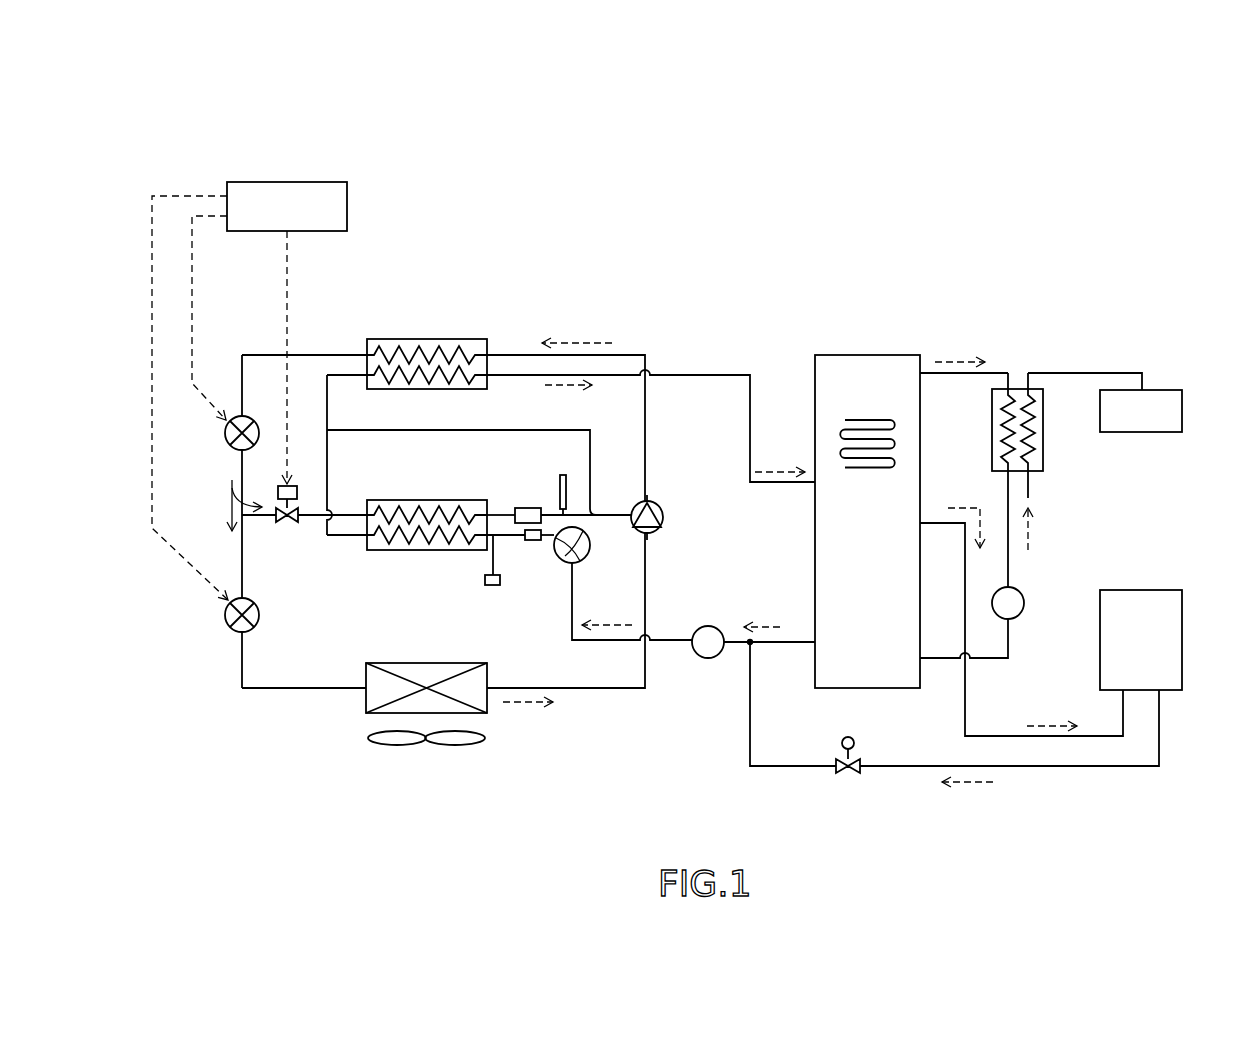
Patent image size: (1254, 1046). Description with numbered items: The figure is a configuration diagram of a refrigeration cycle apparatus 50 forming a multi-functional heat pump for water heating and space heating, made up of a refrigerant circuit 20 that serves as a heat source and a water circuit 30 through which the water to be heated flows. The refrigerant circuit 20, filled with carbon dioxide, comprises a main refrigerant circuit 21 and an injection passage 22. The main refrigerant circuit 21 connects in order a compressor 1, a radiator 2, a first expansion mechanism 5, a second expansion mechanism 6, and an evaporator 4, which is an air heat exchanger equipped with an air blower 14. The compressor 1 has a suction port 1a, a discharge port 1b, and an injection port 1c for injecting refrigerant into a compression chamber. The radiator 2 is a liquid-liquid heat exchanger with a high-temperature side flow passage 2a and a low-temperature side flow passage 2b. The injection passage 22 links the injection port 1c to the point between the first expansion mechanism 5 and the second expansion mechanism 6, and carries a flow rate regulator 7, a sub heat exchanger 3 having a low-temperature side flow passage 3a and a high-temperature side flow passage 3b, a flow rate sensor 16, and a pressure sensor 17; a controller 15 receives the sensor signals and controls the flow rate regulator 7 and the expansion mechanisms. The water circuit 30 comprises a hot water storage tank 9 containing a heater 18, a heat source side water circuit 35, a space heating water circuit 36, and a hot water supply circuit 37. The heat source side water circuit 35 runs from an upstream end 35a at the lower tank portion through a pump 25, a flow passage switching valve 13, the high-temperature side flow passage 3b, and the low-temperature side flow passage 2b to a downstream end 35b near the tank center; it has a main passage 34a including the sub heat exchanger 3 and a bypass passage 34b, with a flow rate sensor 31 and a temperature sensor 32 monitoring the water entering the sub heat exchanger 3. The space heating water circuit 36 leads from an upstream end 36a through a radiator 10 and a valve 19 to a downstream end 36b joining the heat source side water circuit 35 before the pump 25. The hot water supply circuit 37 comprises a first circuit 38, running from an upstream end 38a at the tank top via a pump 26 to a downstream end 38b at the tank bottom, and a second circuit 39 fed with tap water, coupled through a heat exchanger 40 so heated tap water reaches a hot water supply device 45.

The compressor 1 is at (657, 509).
The suction port 1a is at (654, 530).
The discharge port 1b is at (655, 501).
The injection port 1c is at (628, 510).
The radiator 2 is at (430, 347).
The high-temperature side flow passage 2a is at (455, 348).
The low-temperature side flow passage 2b is at (440, 382).
The sub heat exchanger 3 is at (427, 543).
The low-temperature side flow passage 3a is at (418, 506).
The high-temperature side flow passage 3b is at (445, 546).
The evaporator 4 is at (385, 661).
The first expansion mechanism 5 is at (224, 440).
The second expansion mechanism 6 is at (224, 620).
The flow rate regulator 7 is at (292, 487).
The hot water storage tank 9 is at (867, 494).
The radiator 10 is at (1160, 590).
The flow passage switching valve 13 is at (584, 560).
The air blower 14 is at (470, 741).
The controller 15 is at (305, 181).
The flow rate sensor 16 is at (528, 506).
The pressure sensor 17 is at (563, 473).
The heater 18 is at (866, 418).
The valve 19 is at (845, 782).
The refrigerant circuit 20 is at (600, 693).
The main refrigerant circuit 21 is at (612, 352).
The injection passage 22 is at (501, 512).
The pump 25 is at (702, 658).
The pump 26 is at (1020, 612).
The water circuit 30 is at (828, 282).
The flow rate sensor 31 is at (527, 544).
The temperature sensor 32 is at (493, 587).
The main passage 34a is at (332, 540).
The bypass passage 34b is at (400, 430).
The heat source side water circuit 35 is at (681, 371).
The upstream end 35a is at (815, 636).
The downstream end 35b is at (815, 490).
The space heating water circuit 36 is at (933, 676).
The upstream end 36a is at (915, 523).
The downstream end 36b is at (748, 652).
The hot water supply circuit 37 is at (1022, 304).
The first circuit 38 is at (1008, 370).
The upstream end 38a is at (922, 370).
The downstream end 38b is at (915, 658).
The second circuit 39 is at (1061, 372).
The heat exchanger 40 is at (1045, 450).
The hot water supply device 45 is at (1183, 410).
The refrigeration cycle apparatus 50 is at (531, 273).